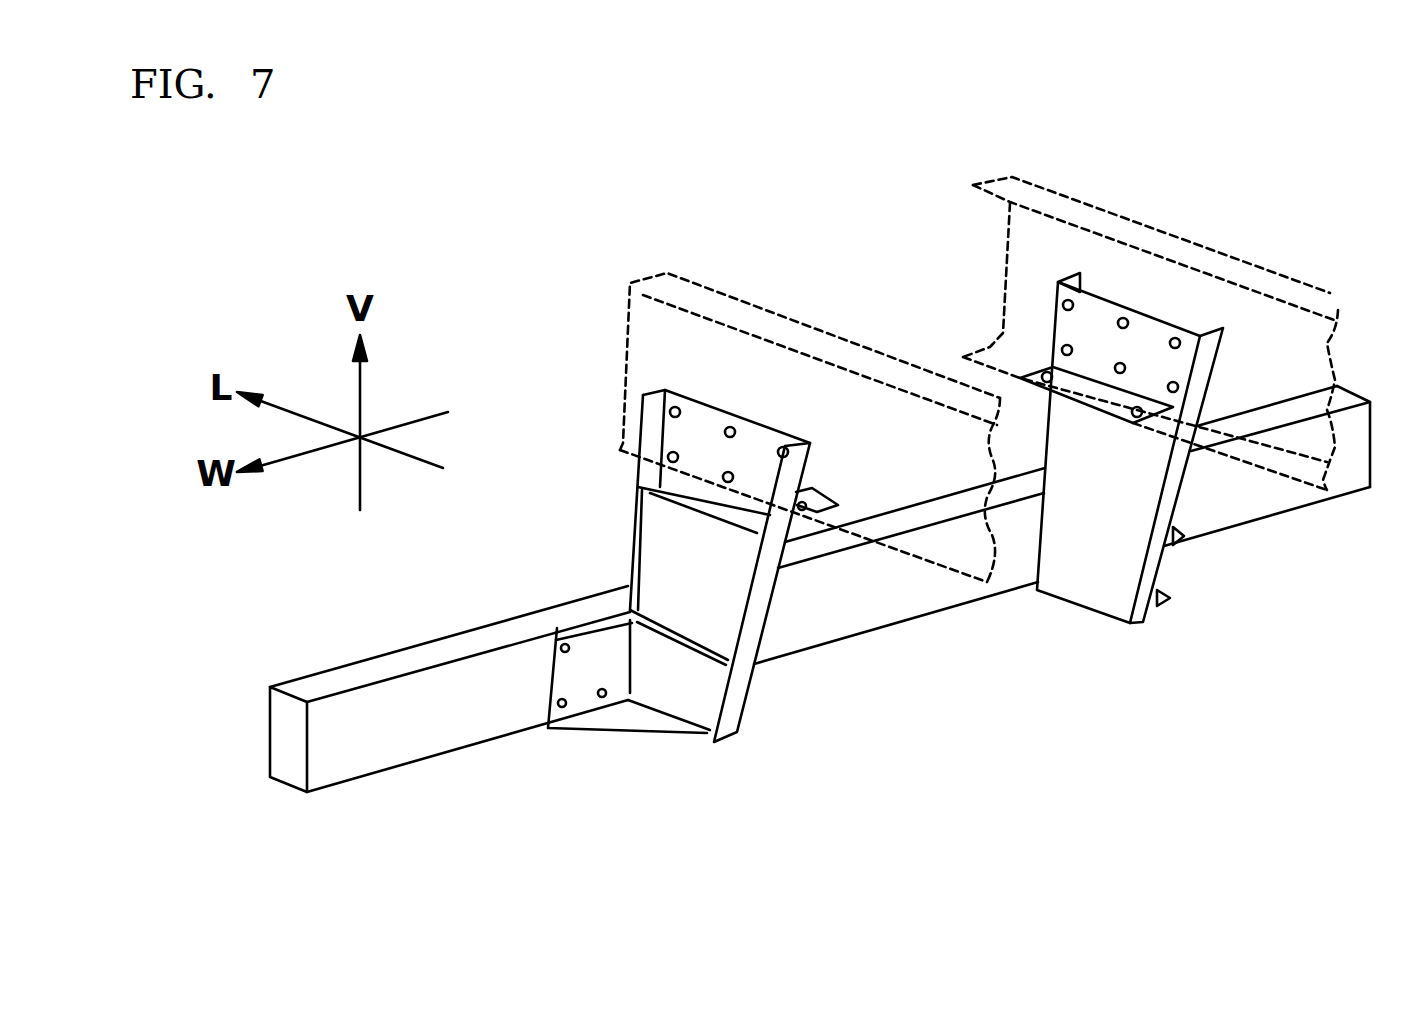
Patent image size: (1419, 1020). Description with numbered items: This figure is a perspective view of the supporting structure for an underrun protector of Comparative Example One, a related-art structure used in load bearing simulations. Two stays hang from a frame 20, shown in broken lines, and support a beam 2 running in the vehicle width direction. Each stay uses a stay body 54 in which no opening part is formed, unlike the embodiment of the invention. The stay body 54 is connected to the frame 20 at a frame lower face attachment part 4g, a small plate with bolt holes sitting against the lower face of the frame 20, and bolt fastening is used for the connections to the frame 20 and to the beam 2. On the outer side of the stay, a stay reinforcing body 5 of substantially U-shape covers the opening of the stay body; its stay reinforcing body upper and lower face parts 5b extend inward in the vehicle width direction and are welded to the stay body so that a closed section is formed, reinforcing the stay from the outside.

The beam 2 is at (402, 720).
The stay reinforcing body 5 is at (596, 558).
The stay reinforcing body upper and lower face part 5b is at (692, 500).
The frame lower face attachment part 4g is at (826, 501).
The frame 20 is at (782, 313).
The stay body 54 is at (772, 672).